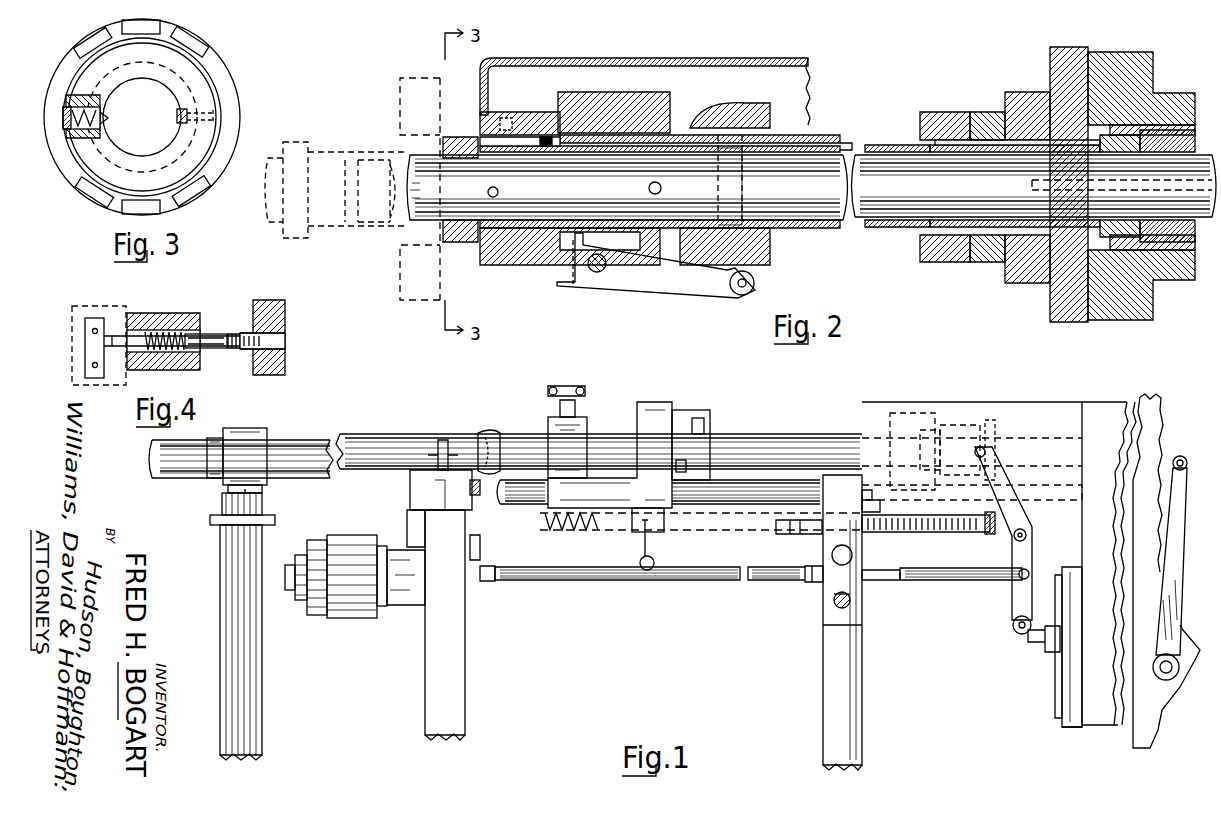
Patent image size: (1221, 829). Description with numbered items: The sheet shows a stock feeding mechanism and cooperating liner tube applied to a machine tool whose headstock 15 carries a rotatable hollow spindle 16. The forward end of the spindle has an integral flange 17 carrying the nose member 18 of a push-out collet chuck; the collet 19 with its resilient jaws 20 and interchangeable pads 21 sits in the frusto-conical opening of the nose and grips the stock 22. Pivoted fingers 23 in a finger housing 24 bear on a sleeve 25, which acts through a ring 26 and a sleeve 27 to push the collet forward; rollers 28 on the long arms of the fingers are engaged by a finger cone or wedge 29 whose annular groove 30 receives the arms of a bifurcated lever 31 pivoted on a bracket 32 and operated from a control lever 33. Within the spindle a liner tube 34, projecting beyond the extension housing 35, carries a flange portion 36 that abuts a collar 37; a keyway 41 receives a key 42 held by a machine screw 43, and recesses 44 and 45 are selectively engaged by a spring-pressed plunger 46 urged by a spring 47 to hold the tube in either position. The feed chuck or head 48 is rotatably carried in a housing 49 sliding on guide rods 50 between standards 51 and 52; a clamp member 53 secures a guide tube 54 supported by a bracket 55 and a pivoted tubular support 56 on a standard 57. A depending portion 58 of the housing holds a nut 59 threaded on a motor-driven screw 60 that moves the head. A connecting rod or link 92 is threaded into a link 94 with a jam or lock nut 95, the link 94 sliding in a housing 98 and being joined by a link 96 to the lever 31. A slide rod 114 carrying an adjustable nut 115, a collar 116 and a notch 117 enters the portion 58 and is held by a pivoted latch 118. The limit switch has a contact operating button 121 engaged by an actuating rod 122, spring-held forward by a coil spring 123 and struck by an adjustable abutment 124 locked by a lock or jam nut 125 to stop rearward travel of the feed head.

In FIG. 1, the headstock 15 is at (1128, 752).
In FIG. 2, the hollow spindle 16 is at (970, 112).
In FIG. 2, the integral flange 17 is at (1050, 64).
In FIG. 2, the nose member 18 is at (1170, 93).
In FIG. 2, the collet 19 is at (1100, 148).
In FIG. 2, the resilient jaws 20 is at (1150, 150).
In FIG. 2, the interchangeable jaws or pads 21 is at (1180, 150).
In FIG. 2, the stock 22 is at (378, 235).
In FIG. 2, the pivoted fingers 23 is at (652, 292).
In FIG. 2, the finger housing 24 is at (663, 91).
In FIG. 2, the sleeve 25 is at (748, 150).
In FIG. 2, the ring 26 is at (982, 138).
In FIG. 2, the sleeve 27 is at (892, 143).
In FIG. 2, the rollers 28 is at (757, 280).
In FIG. 1, the finger cone or wedge 29 is at (960, 430).
In FIG. 1, the annular groove 30 is at (988, 420).
In FIG. 1, the bifurcated lever 31 is at (1012, 548).
In FIG. 1, the bracket 32 is at (1052, 560).
In FIG. 1, the control lever 33 is at (1192, 466).
In FIG. 2, the liner tube 34 is at (842, 142).
In FIG. 2, the extension housing 35 is at (770, 57).
In FIG. 2, the flange portion 36 is at (462, 135).
In FIG. 2, the collar 37 is at (534, 265).
In FIG. 2, the keyway 41 is at (582, 149).
In FIG. 2, the key 42 is at (548, 147).
In FIG. 2, the machine screw 43 is at (522, 112).
In FIG. 2, the recess 44 is at (662, 190).
In FIG. 2, the recess 45 is at (497, 195).
In FIG. 3, the spring-pressed plunger 46 is at (104, 117).
In FIG. 3, the spring 47 is at (84, 94).
In FIG. 1, the feed chuck or head 48 is at (688, 410).
In FIG. 1, the housing 49 is at (650, 402).
In FIG. 1, the guide rods 50 is at (748, 507).
In FIG. 1, the standard 51 is at (835, 667).
In FIG. 1, the standard 52 is at (465, 672).
In FIG. 1, the clamp member 53 is at (597, 411).
In FIG. 1, the guide tube 54 is at (522, 432).
In FIG. 1, the bracket 55 is at (420, 478).
In FIG. 1, the tubular support 56 is at (256, 428).
In FIG. 1, the standard 57 is at (263, 680).
In FIG. 1, the depending portion 58 is at (670, 528).
In FIG. 1, the nut 59 is at (654, 552).
In FIG. 1, the screw 60 is at (575, 532).
In FIG. 1, the connecting rod or link 92 is at (705, 582).
In FIG. 1, the link 94 is at (896, 570).
In FIG. 1, the jam or lock nut 95 is at (812, 582).
In FIG. 1, the link 96 is at (966, 582).
In FIG. 1, the housing 98 is at (855, 615).
In FIG. 1, the slide rod 114 is at (912, 532).
In FIG. 1, the nut 115 is at (985, 535).
In FIG. 1, the collar 116 is at (820, 525).
In FIG. 1, the notch 117 is at (790, 535).
In FIG. 1, the pivoted latch 118 is at (641, 546).
In FIG. 4, the contact operating button 121 is at (114, 332).
In FIG. 4, the actuating rod 122 is at (212, 333).
In FIG. 4, the coil spring 123 is at (170, 330).
In FIG. 4, the adjustable abutment 124 is at (233, 350).
In FIG. 4, the lock or jam nut 125 is at (248, 330).